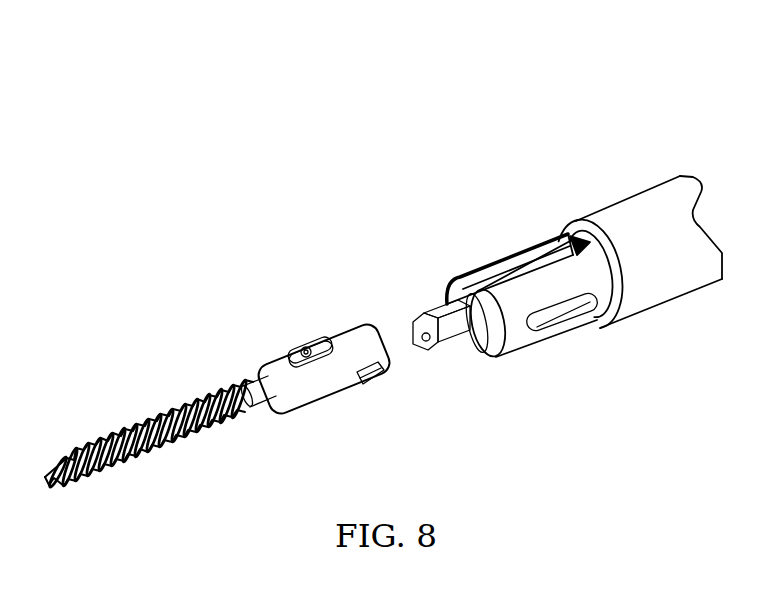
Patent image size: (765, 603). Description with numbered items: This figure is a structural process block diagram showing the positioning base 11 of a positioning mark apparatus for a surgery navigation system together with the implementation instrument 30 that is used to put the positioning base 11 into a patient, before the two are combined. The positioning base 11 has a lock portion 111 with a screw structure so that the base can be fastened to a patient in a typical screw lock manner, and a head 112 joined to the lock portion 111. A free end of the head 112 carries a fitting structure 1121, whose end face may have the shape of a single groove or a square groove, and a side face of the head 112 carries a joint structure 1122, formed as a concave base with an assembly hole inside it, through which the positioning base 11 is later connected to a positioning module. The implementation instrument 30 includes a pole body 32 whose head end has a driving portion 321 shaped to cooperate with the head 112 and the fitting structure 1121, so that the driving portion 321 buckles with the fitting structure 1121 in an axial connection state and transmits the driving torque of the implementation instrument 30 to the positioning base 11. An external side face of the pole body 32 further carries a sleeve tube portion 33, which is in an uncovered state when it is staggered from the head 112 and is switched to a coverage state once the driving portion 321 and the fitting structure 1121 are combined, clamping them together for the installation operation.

The positioning base 11 is at (228, 240).
The lock portion 111 is at (175, 408).
The head 112 is at (275, 357).
The fitting structure 1121 is at (382, 360).
The joint structure 1122 is at (300, 350).
The implementation instrument 30 is at (593, 152).
The pole body 32 is at (475, 300).
The driving portion 321 is at (408, 332).
The sleeve tube portion 33 is at (663, 187).